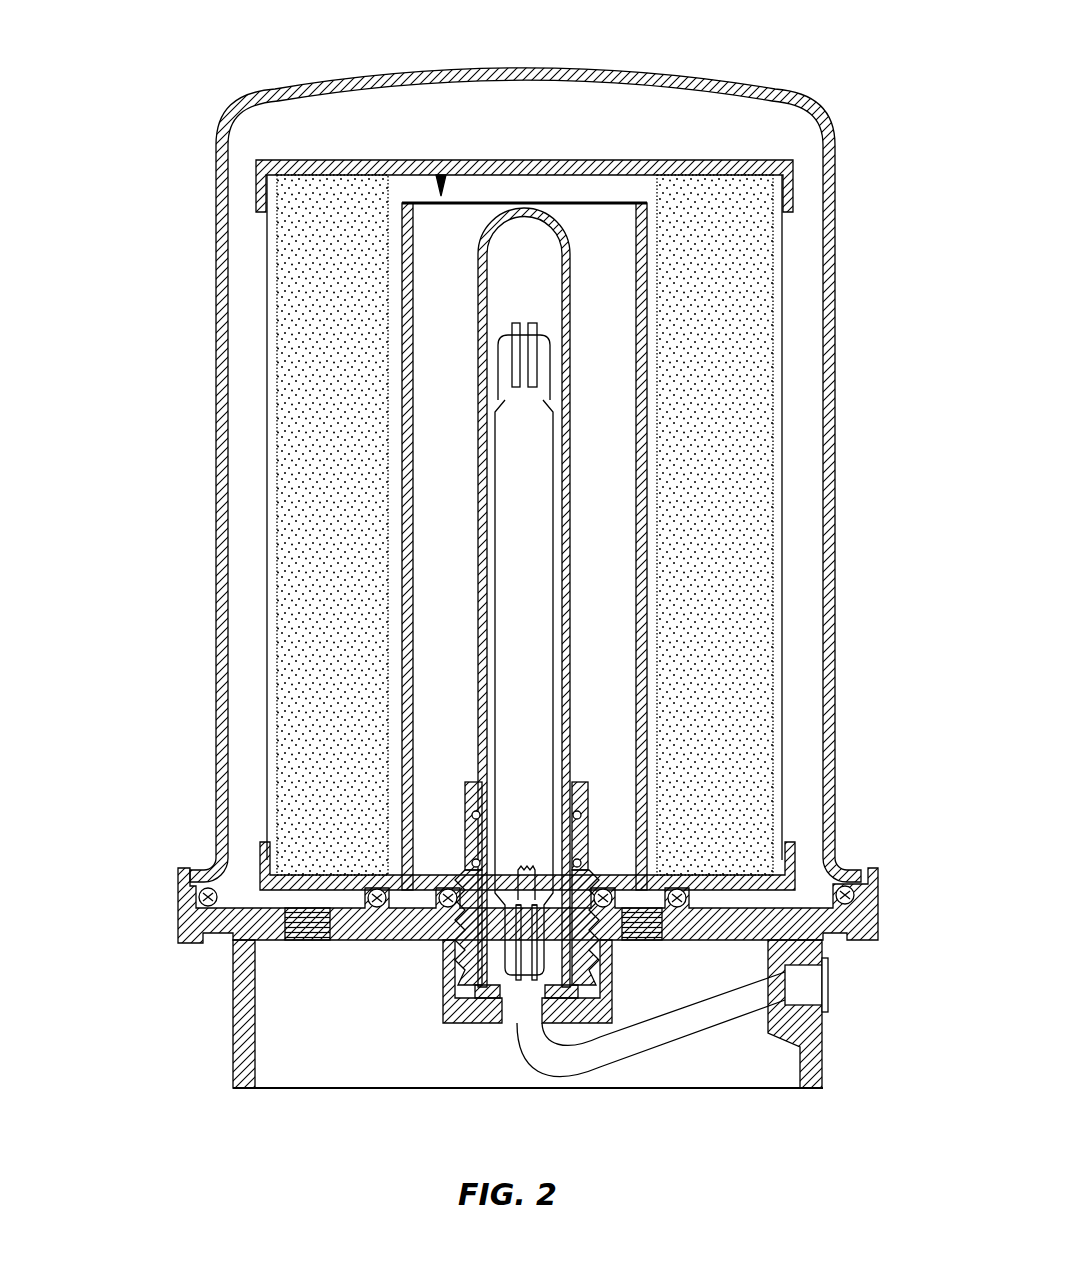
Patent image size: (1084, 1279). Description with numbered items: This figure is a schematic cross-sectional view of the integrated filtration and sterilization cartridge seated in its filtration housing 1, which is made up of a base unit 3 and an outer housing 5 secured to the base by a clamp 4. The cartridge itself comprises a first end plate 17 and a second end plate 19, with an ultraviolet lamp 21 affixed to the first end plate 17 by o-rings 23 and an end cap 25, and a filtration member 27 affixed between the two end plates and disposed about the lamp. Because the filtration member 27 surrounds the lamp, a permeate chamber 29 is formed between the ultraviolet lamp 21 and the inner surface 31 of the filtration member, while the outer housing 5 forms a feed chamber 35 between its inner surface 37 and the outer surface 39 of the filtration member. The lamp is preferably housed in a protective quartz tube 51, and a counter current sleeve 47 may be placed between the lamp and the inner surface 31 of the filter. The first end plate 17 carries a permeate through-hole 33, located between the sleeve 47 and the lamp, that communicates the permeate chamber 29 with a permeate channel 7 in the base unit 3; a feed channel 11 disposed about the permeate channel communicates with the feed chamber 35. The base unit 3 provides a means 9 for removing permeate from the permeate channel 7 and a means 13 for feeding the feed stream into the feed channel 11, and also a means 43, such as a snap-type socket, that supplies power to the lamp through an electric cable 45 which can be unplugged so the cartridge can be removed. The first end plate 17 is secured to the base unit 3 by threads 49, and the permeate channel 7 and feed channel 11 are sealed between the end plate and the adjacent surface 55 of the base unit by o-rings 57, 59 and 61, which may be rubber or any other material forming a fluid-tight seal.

The filtration housing 1 is at (165, 530).
The base unit 3 is at (233, 1003).
The clamp 4 is at (880, 907).
The outer housing 5 is at (433, 68).
The permeate channel 7 is at (415, 905).
The means for removing permeate 9 is at (640, 915).
The feed channel 11 is at (268, 915).
The means for feeding a feed stream 13 is at (315, 920).
The first end plate 17 is at (800, 852).
The second end plate 19 is at (375, 160).
The ultraviolet lamp 21 is at (498, 460).
The o-rings 23 is at (580, 820).
The end cap 25 is at (512, 1010).
The filtration member 27 is at (750, 594).
The permeate chamber 29 is at (442, 175).
The inner surface of filtration member 31 is at (405, 556).
The permeate through-hole 33 is at (428, 885).
The feed chamber 35 is at (248, 425).
The inner surface of outer housing 37 is at (228, 392).
The outer surface of filtration member 39 is at (267, 625).
The means for supplying power 43 is at (830, 985).
The electric cable 45 is at (675, 1035).
The counter current sleeve 47 is at (413, 312).
The threads 49 is at (458, 975).
The protective quartz tube 51 is at (570, 290).
The adjacent surface of base unit 55 is at (248, 907).
The o-ring 57 is at (465, 890).
The o-ring 59 is at (380, 910).
The o-ring 61 is at (198, 897).